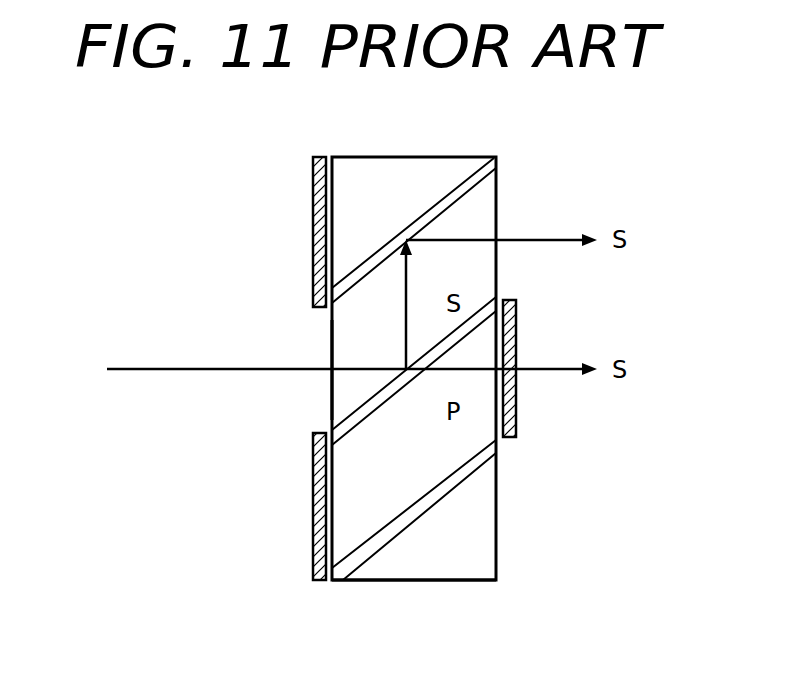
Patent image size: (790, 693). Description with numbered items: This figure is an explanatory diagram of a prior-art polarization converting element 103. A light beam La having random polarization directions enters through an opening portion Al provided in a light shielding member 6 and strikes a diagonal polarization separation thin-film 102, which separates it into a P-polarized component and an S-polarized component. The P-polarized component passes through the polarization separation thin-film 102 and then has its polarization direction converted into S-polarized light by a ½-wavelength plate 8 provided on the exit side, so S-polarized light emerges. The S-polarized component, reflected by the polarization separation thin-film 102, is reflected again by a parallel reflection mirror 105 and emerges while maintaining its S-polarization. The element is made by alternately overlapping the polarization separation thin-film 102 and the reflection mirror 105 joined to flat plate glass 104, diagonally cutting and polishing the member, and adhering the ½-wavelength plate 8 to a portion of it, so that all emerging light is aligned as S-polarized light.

The polarization converting element 103 is at (356, 182).
The reflection mirror 105 is at (429, 205).
The polarization separation thin-film 102 is at (367, 410).
The flat plate glass 104 is at (385, 497).
The light shielding member 6 is at (313, 472).
The ½-wavelength plate 8 is at (517, 405).
The opening portion Al is at (332, 345).
The light beam La is at (173, 371).